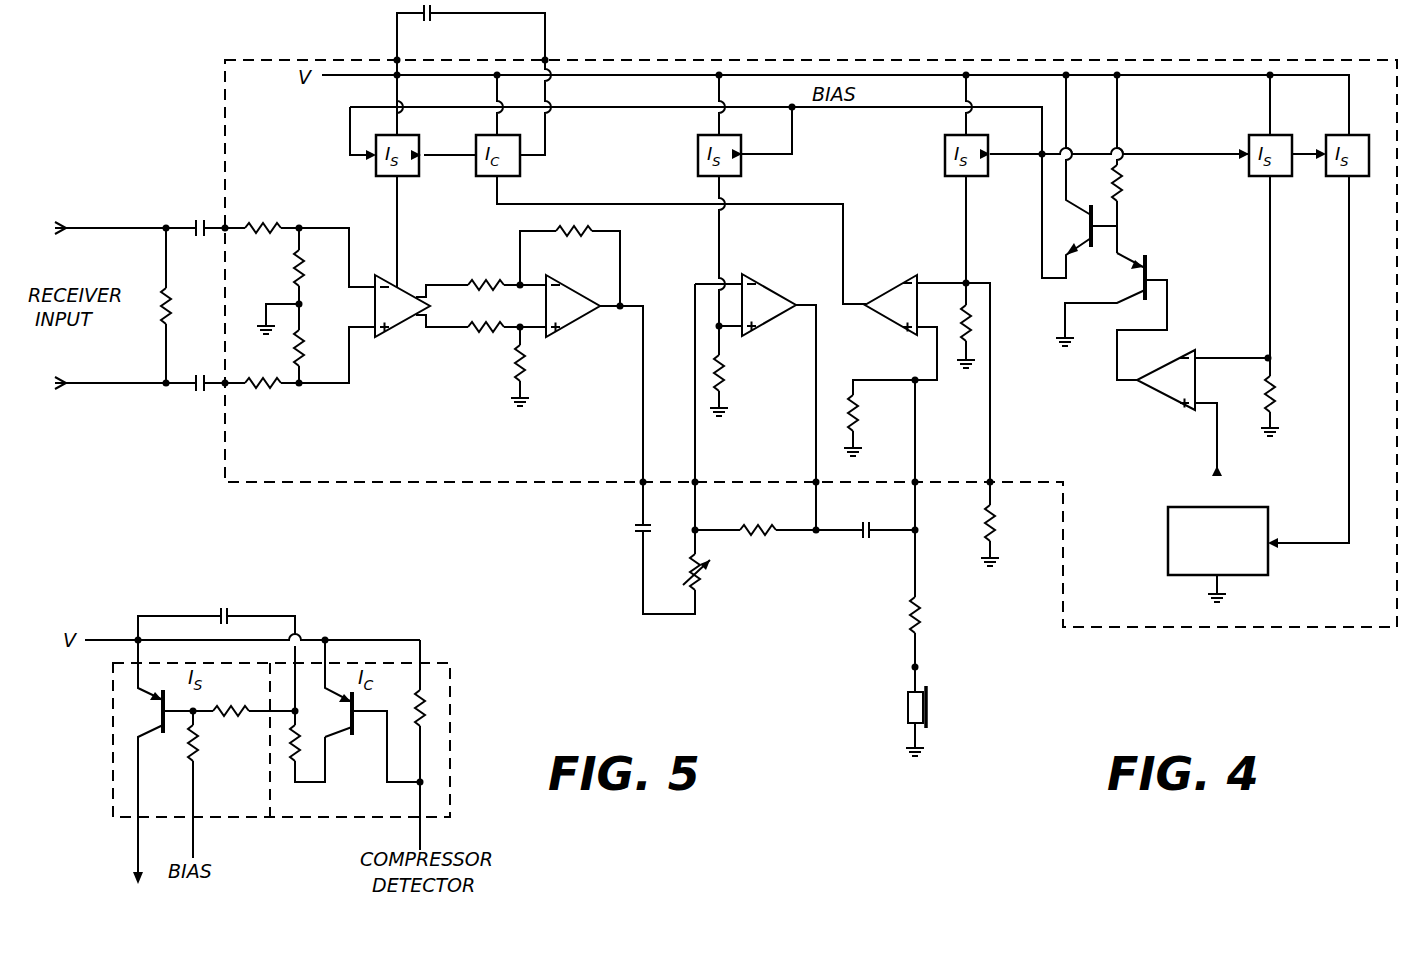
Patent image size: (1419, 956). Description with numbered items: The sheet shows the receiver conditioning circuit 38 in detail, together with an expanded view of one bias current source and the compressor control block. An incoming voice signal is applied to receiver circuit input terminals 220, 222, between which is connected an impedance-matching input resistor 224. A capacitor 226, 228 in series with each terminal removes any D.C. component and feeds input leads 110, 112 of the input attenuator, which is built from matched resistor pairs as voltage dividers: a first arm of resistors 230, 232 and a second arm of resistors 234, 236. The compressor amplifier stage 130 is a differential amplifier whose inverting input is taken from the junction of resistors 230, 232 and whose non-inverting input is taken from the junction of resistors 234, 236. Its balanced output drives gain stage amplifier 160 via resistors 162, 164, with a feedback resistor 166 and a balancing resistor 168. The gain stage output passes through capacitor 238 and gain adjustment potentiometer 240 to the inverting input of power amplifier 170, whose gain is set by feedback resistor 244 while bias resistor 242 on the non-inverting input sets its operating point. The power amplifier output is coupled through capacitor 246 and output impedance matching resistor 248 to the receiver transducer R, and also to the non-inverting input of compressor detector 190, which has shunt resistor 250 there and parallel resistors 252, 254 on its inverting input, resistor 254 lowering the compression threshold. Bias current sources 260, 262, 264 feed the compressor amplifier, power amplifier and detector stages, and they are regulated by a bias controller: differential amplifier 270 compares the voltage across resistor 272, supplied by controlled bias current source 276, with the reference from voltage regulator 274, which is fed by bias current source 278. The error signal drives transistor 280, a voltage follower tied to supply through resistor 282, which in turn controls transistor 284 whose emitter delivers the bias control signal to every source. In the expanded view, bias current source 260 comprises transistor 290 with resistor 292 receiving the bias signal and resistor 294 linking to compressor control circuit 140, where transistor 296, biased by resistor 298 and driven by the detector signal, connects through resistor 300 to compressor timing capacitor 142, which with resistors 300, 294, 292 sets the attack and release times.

In FIG. 4, the receiver conditioning circuit 38 is at (298, 60).
In FIG. 4, the input lead 110 is at (228, 386).
In FIG. 4, the input lead 112 is at (233, 226).
In FIG. 4, the compressor amplifier stage 130 is at (378, 338).
In FIG. 4, the compressor control circuit 140 is at (520, 172).
In FIG. 5, the compressor control circuit 140 is at (450, 670).
In FIG. 5, the compressor timing capacitor 142 is at (224, 608).
In FIG. 4, the gain stage amplifier 160 is at (582, 318).
In FIG. 4, the resistor 162 is at (484, 272).
In FIG. 4, the resistor 164 is at (486, 336).
In FIG. 4, the feedback resistor 166 is at (568, 240).
In FIG. 4, the balancing resistor 168 is at (530, 370).
In FIG. 4, the power amplifier 170 is at (796, 262).
In FIG. 4, the compressor detector 190 is at (880, 278).
In FIG. 4, the receiver circuit input terminal 220 is at (82, 226).
In FIG. 4, the receiver circuit input terminal 222 is at (78, 395).
In FIG. 4, the impedance-matching input resistor 224 is at (172, 305).
In FIG. 4, the capacitor 226 is at (202, 220).
In FIG. 4, the capacitor 228 is at (198, 391).
In FIG. 4, the resistor 230 is at (278, 226).
In FIG. 4, the resistor 232 is at (294, 278).
In FIG. 4, the resistor 234 is at (274, 386).
In FIG. 4, the resistor 236 is at (310, 338).
In FIG. 4, the capacitor 238 is at (632, 536).
In FIG. 4, the gain adjustment potentiometer 240 is at (704, 582).
In FIG. 4, the bias resistor 242 is at (770, 524).
In FIG. 4, the feedback resistor 244 is at (726, 372).
In FIG. 4, the capacitor 246 is at (868, 548).
In FIG. 4, the output impedance matching resistor 248 is at (922, 622).
In FIG. 4, the resistor 250 is at (858, 414).
In FIG. 4, the resistor 252 is at (972, 320).
In FIG. 4, the resistor 254 is at (996, 531).
In FIG. 4, the bias current source 260 is at (418, 178).
In FIG. 5, the bias current source 260 is at (111, 696).
In FIG. 4, the bias current source 262 is at (740, 174).
In FIG. 4, the bias current source 264 is at (968, 178).
In FIG. 4, the differential amplifier 270 is at (1162, 408).
In FIG. 4, the resistor 272 is at (1276, 392).
In FIG. 4, the reference voltage regulator 274 is at (1246, 506).
In FIG. 4, the controlled bias current source 276 is at (1258, 184).
In FIG. 4, the bias current source 278 is at (1342, 184).
In FIG. 4, the transistor 280 is at (1150, 264).
In FIG. 4, the resistor 282 is at (1122, 188).
In FIG. 4, the transistor 284 is at (1082, 206).
In FIG. 5, the transistor 290 is at (122, 740).
In FIG. 5, the resistor 292 is at (200, 762).
In FIG. 5, the resistor 294 is at (250, 736).
In FIG. 5, the transistor 296 is at (354, 740).
In FIG. 5, the bias resistor 298 is at (428, 728).
In FIG. 5, the resistor 300 is at (290, 788).
In FIG. 4, the receiver transducer R is at (906, 710).